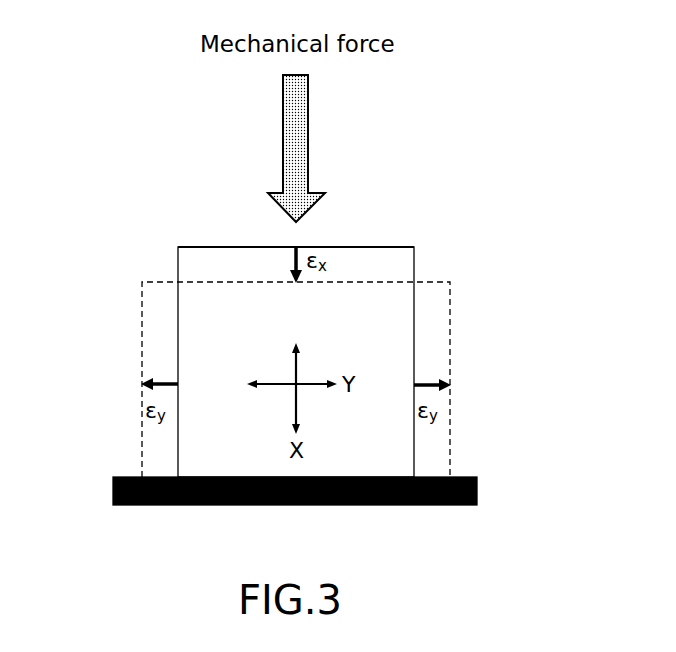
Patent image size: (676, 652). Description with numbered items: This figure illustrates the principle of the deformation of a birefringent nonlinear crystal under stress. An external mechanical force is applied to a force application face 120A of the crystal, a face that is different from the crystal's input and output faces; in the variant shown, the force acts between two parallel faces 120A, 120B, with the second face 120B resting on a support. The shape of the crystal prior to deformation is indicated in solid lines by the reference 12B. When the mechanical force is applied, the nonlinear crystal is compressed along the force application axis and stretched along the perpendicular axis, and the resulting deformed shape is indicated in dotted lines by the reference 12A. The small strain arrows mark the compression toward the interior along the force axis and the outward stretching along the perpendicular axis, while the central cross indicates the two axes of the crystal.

The deformed shape of nonlinear crystal 12A is at (435, 282).
The undeformed shape of nonlinear crystal 12B is at (178, 249).
The force application face 120A is at (373, 247).
The force application face 120B is at (362, 477).